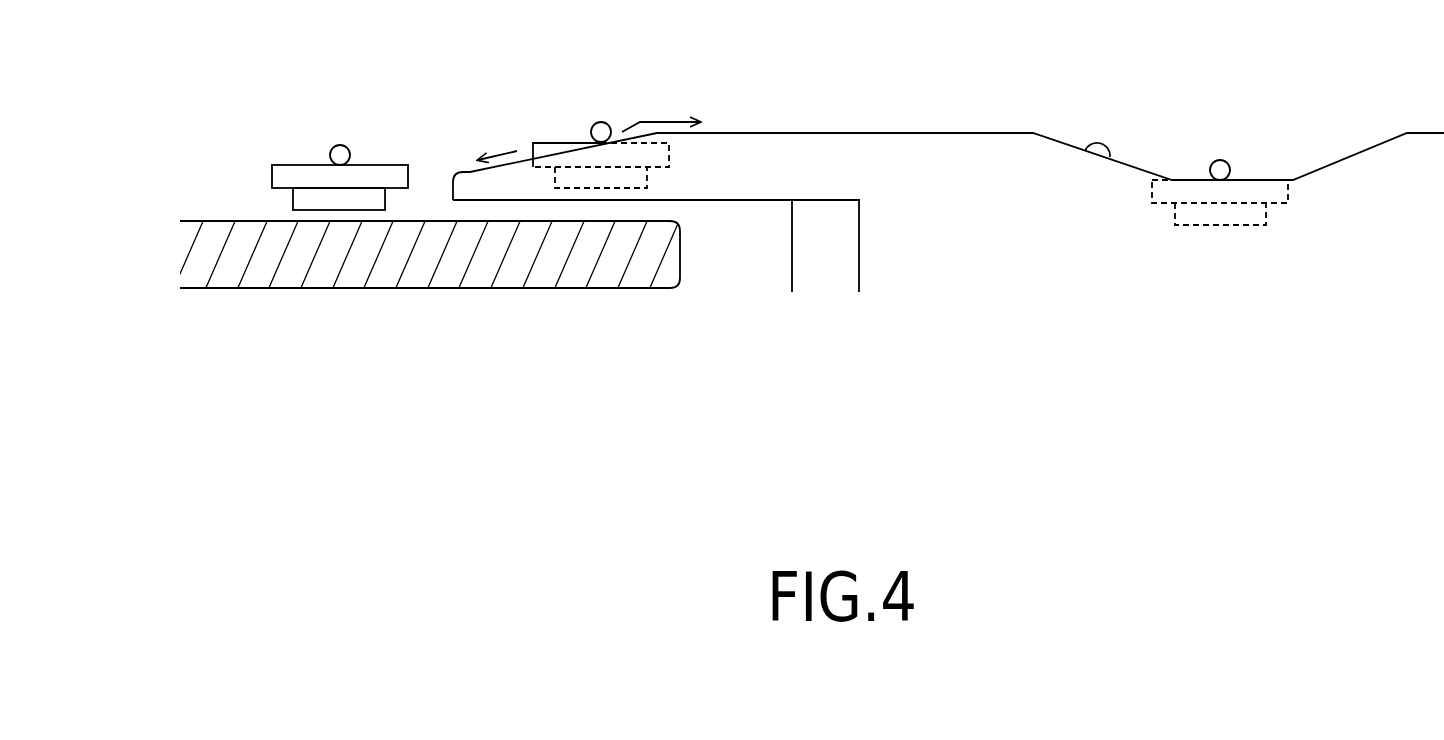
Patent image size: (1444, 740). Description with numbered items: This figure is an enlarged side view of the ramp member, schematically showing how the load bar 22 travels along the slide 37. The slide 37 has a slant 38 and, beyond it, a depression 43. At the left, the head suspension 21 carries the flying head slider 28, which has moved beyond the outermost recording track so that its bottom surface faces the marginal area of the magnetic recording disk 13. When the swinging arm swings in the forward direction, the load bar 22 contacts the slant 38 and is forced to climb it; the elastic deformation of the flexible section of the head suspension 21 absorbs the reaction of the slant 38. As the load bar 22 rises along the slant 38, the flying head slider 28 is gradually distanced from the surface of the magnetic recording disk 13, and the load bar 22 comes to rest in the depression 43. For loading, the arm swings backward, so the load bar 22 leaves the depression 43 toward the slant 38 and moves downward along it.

The magnetic recording disk 13 is at (630, 292).
The head suspension 21 is at (390, 166).
The load bar 22 is at (340, 145).
The flying head slider 28 is at (293, 200).
The slide 37 is at (807, 103).
The slant 38 is at (640, 131).
The depression 43 is at (1110, 157).